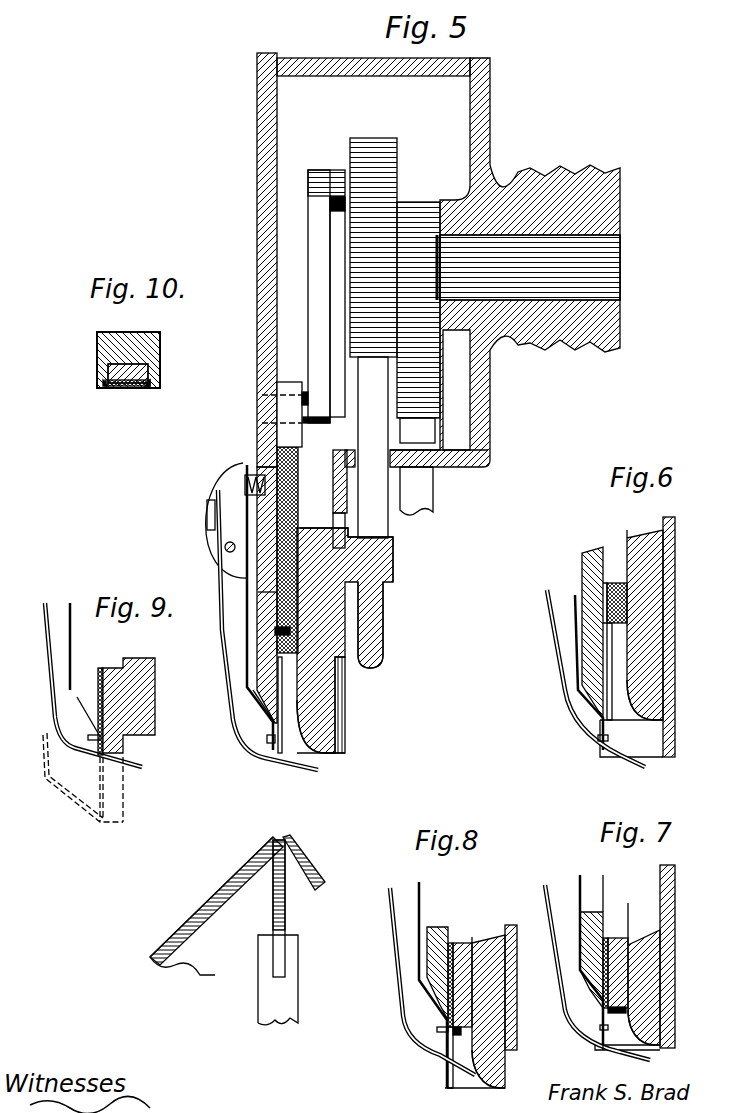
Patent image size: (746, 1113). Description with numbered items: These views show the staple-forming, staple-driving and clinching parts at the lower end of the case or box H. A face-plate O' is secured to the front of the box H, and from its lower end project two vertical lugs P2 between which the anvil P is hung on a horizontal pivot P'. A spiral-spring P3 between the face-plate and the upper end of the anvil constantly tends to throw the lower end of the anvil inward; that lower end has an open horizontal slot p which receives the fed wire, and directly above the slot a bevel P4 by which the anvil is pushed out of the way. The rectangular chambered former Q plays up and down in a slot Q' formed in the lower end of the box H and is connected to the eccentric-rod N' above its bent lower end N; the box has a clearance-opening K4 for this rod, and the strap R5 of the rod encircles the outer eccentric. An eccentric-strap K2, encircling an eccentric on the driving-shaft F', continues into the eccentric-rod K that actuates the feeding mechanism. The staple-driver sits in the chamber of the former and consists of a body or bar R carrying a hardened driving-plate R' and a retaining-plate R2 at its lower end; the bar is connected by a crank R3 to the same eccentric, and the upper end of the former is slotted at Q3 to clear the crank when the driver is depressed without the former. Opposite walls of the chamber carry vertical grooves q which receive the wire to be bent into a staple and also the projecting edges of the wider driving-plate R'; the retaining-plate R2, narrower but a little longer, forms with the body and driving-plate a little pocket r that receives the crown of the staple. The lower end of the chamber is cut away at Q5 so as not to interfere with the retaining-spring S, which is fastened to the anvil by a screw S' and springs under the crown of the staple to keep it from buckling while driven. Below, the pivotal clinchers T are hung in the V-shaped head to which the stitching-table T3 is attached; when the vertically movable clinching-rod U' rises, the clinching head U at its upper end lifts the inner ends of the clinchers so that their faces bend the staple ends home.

In FIG. 5, the face-plate O' is at (350, 260).
In FIG. 8, the face-plate O' is at (395, 933).
In FIG. 5, the case or box H is at (490, 120).
In FIG. 5, the driving-shaft F' is at (528, 267).
In FIG. 5, the eccentric-strap K2 is at (397, 155).
In FIG. 5, the crank R3 is at (308, 247).
In FIG. 5, the strap of the eccentric-rod R5 is at (418, 310).
In FIG. 5, the eccentric-rod K is at (417, 466).
In FIG. 5, the clearance-opening K4 is at (412, 480).
In FIG. 5, the eccentric-rod N' is at (373, 447).
In FIG. 5, the slot in former Q3 is at (331, 499).
In FIG. 5, the body or bar of staple-driver R is at (259, 552).
In FIG. 6, the body or bar of staple-driver R is at (646, 632).
In FIG. 7, the body or bar of staple-driver R is at (614, 941).
In FIG. 8, the body or bar of staple-driver R is at (412, 973).
In FIG. 10, the body or bar of staple-driver R is at (138, 362).
In FIG. 5, the chambered former Q is at (345, 640).
In FIG. 6, the chambered former Q is at (653, 637).
In FIG. 7, the chambered former Q is at (652, 957).
In FIG. 8, the chambered former Q is at (490, 1006).
In FIG. 10, the chambered former Q is at (115, 360).
In FIG. 5, the cut-away of former chamber Q5 is at (310, 728).
In FIG. 6, the cut-away of former chamber Q5 is at (655, 700).
In FIG. 7, the cut-away of former chamber Q5 is at (660, 1020).
In FIG. 8, the cut-away of former chamber Q5 is at (495, 1075).
In FIG. 5, the bent lower end of eccentric-rod N is at (389, 625).
In FIG. 5, the driving-plate R' is at (346, 564).
In FIG. 6, the driving-plate R' is at (617, 585).
In FIG. 7, the driving-plate R' is at (619, 950).
In FIG. 8, the driving-plate R' is at (464, 970).
In FIG. 9, the driving-plate R' is at (140, 705).
In FIG. 10, the driving-plate R' is at (151, 370).
In FIG. 5, the vertical grooves q is at (286, 705).
In FIG. 6, the vertical grooves q is at (614, 671).
In FIG. 8, the vertical grooves q is at (450, 1057).
In FIG. 10, the vertical grooves q is at (103, 385).
In FIG. 5, the pocket r is at (257, 663).
In FIG. 7, the pocket r is at (617, 1017).
In FIG. 8, the pocket r is at (459, 1038).
In FIG. 9, the pocket r is at (100, 758).
In FIG. 5, the horizontal slot of anvil p is at (266, 745).
In FIG. 6, the horizontal slot of anvil p is at (598, 738).
In FIG. 7, the horizontal slot of anvil p is at (600, 1028).
In FIG. 8, the horizontal slot of anvil p is at (437, 1029).
In FIG. 9, the horizontal slot of anvil p is at (88, 738).
In FIG. 5, the slot in case Q' is at (308, 770).
In FIG. 6, the slot in case Q' is at (661, 690).
In FIG. 7, the slot in case Q' is at (613, 1062).
In FIG. 8, the slot in case Q' is at (433, 1077).
In FIG. 5, the anvil P is at (239, 606).
In FIG. 6, the anvil P is at (569, 672).
In FIG. 7, the anvil P is at (590, 960).
In FIG. 8, the anvil P is at (425, 985).
In FIG. 9, the anvil P is at (80, 668).
In FIG. 5, the bevel of anvil P4 is at (257, 700).
In FIG. 5, the retaining-spring S is at (258, 630).
In FIG. 6, the retaining-spring S is at (590, 678).
In FIG. 7, the retaining-spring S is at (597, 972).
In FIG. 8, the retaining-spring S is at (428, 981).
In FIG. 9, the retaining-spring S is at (89, 685).
In FIG. 5, the screw S' is at (198, 515).
In FIG. 5, the horizontal pivot P' is at (208, 556).
In FIG. 5, the spiral-spring P3 is at (245, 483).
In FIG. 5, the vertical lugs P2 is at (250, 507).
In FIG. 5, the retaining-plate R2 is at (258, 592).
In FIG. 6, the retaining-plate R2 is at (578, 582).
In FIG. 7, the retaining-plate R2 is at (605, 938).
In FIG. 8, the retaining-plate R2 is at (450, 943).
In FIG. 9, the retaining-plate R2 is at (100, 684).
In FIG. 10, the retaining-plate R2 is at (113, 388).
In FIG. 9, the pivotal clinchers T is at (278, 840).
In FIG. 9, the stitching-table T3 is at (222, 886).
In FIG. 9, the clinching head U is at (288, 908).
In FIG. 9, the clinching-rod U' is at (262, 980).